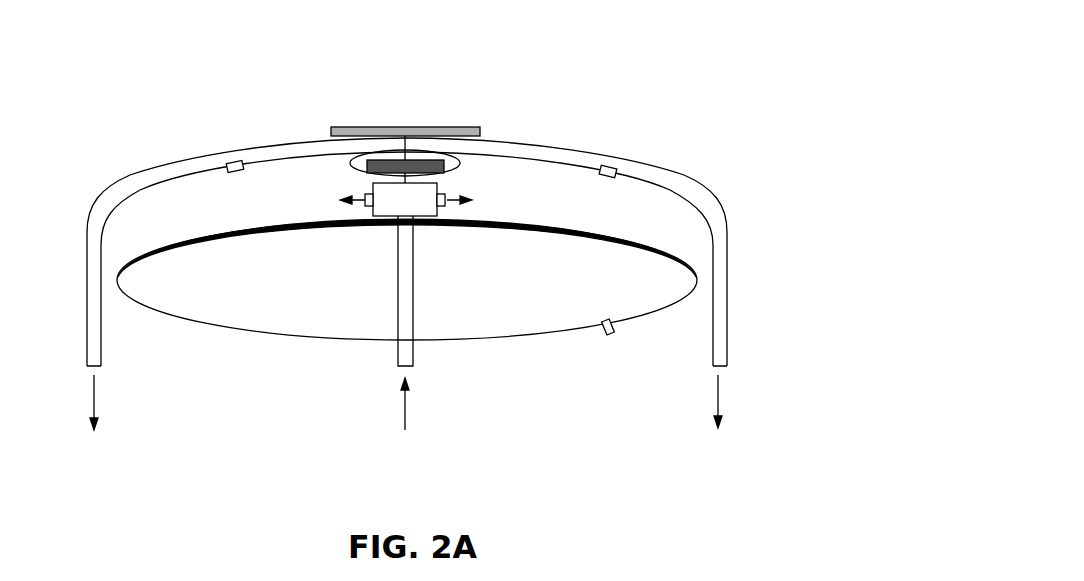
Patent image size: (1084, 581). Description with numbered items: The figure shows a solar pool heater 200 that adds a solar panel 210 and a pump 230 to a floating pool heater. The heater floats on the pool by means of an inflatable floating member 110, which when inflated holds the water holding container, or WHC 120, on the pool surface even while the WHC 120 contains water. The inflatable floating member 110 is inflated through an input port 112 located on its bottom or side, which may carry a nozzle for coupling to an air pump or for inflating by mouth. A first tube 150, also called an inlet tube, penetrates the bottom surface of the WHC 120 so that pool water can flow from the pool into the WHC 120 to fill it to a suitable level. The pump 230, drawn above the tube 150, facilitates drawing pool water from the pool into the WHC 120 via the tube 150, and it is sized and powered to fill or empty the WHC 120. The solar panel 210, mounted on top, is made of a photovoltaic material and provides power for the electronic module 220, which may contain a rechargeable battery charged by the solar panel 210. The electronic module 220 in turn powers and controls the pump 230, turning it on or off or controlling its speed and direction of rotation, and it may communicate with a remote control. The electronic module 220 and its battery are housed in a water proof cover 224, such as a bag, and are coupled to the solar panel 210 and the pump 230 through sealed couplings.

The solar pool heater 200 is at (693, 62).
The solar panel 210 is at (345, 127).
The electronic module 220 is at (437, 158).
The water proof cover 224 is at (462, 166).
The WHC 120 is at (640, 222).
The pump 230 is at (376, 217).
The inflatable floating member 110 is at (507, 301).
The input port 112 is at (603, 336).
The first tube 150 is at (392, 353).